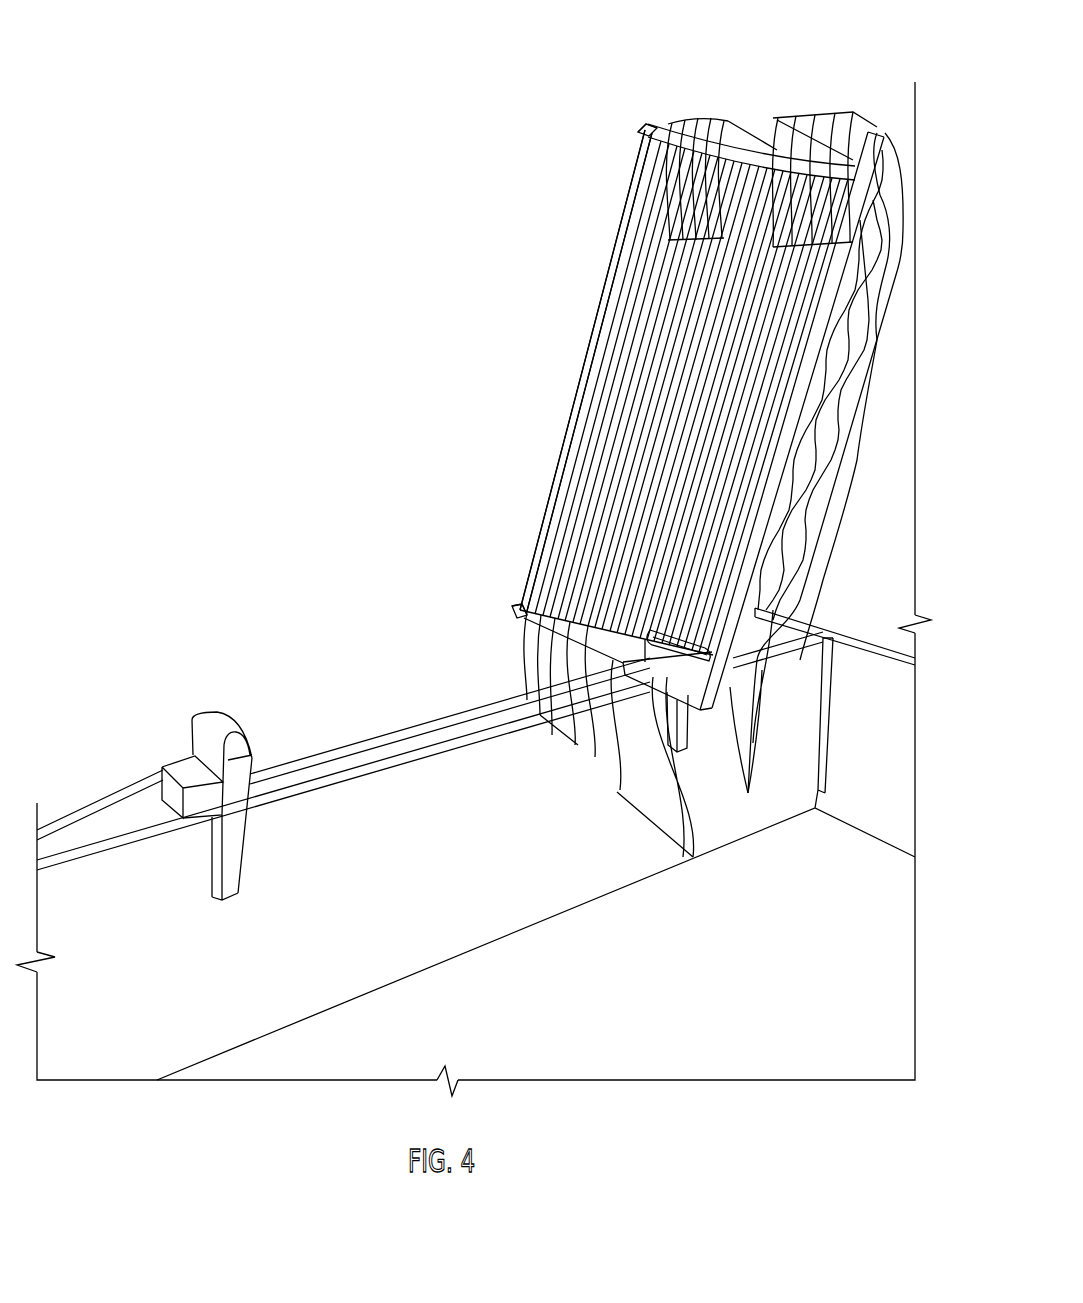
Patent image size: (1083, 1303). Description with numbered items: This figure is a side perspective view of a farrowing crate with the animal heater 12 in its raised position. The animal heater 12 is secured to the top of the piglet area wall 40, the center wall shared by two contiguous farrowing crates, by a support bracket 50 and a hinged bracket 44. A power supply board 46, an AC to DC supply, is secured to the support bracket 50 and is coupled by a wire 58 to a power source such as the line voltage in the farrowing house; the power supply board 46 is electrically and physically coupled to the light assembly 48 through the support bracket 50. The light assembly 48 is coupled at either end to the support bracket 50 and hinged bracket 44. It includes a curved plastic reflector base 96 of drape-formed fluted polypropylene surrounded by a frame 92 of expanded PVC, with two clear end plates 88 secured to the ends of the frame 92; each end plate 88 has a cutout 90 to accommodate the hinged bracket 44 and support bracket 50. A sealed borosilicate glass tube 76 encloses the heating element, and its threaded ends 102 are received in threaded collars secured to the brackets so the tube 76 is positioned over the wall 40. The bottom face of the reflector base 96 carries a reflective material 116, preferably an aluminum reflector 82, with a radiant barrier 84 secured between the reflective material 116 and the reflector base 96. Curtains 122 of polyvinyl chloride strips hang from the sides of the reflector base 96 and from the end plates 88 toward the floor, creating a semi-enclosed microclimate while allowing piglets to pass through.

The animal heater 12 is at (482, 537).
The piglet area wall 40 is at (420, 898).
The hinged bracket 44 is at (618, 786).
The power supply board 46 is at (185, 770).
The light assembly 48 is at (375, 714).
The support bracket 50 is at (232, 848).
The wire 58 is at (67, 816).
The tube 76 is at (418, 725).
The reflector 82 is at (641, 160).
The radiant barrier 84 is at (668, 262).
The end plates 88 is at (720, 128).
The cutout 90 is at (755, 125).
The frame 92 is at (876, 143).
The curved plastic reflector base 96 is at (787, 507).
The threaded ends 102 is at (250, 763).
The reflective material 116 is at (606, 432).
The curtains 122 is at (840, 410).